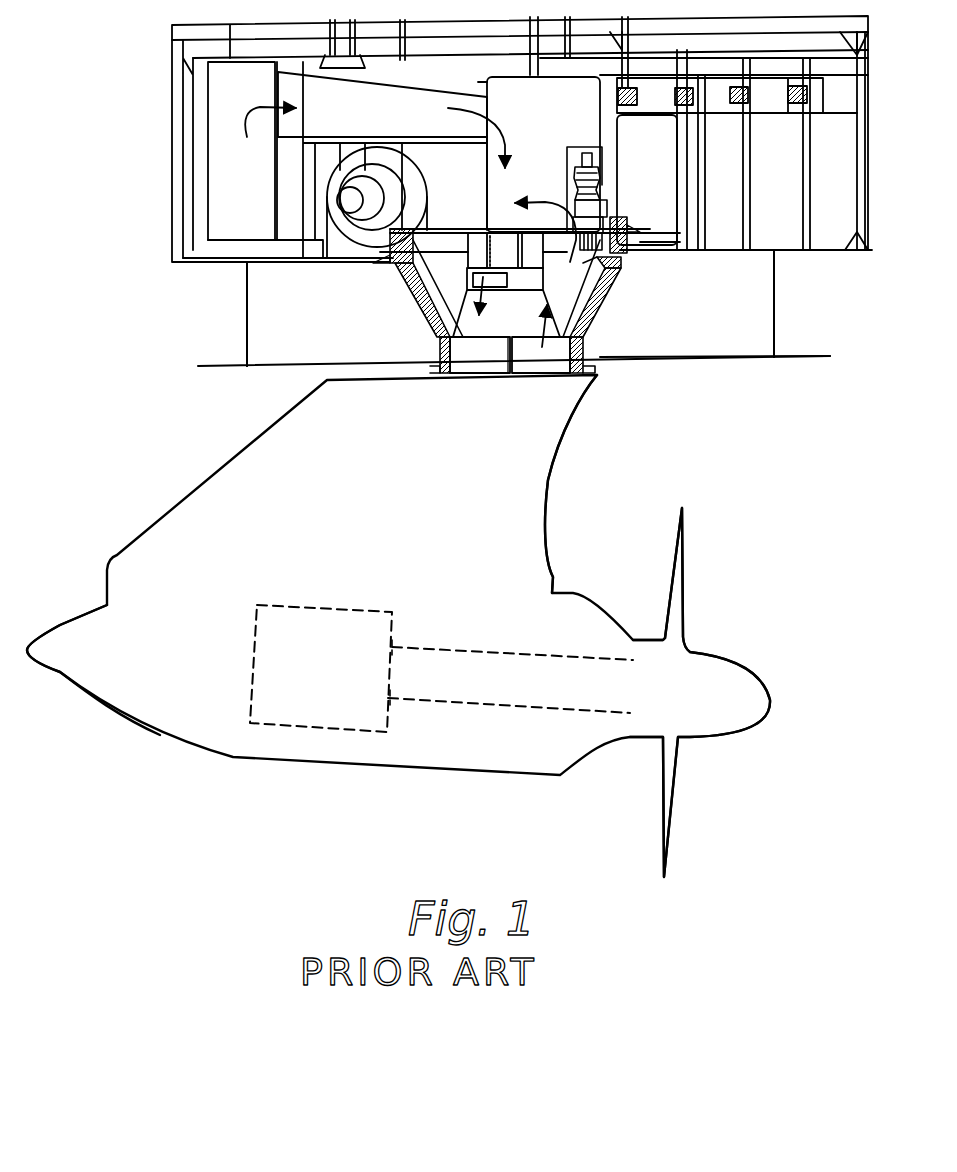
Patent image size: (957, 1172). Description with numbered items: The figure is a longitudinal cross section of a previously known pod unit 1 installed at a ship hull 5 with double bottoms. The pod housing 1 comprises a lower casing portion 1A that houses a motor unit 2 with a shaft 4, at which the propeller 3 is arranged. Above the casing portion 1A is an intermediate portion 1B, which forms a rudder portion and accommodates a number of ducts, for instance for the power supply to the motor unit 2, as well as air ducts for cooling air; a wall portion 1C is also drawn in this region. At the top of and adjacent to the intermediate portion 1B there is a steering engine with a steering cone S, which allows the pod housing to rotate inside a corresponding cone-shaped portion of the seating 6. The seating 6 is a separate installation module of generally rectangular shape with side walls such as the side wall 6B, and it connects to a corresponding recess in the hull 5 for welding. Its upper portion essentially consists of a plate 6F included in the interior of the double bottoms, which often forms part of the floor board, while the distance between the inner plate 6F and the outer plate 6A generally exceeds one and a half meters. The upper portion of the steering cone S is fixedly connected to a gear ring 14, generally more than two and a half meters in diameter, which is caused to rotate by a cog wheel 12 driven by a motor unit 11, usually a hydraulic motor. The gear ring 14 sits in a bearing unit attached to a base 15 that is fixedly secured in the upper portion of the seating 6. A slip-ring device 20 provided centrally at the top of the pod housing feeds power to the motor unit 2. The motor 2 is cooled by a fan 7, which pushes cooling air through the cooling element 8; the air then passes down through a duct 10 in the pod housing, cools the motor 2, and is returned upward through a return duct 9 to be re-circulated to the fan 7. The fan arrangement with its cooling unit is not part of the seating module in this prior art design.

The pod unit 1 is at (148, 481).
The lower casing portion 1A is at (122, 717).
The intermediate portion 1B is at (552, 478).
The stern tube wall of the hull 1C is at (592, 306).
The motor unit 2 is at (267, 637).
The propeller 3 is at (677, 627).
The shaft 4 is at (488, 667).
The ship hull 5 is at (802, 358).
The seating 6 is at (652, 366).
The outer plate 6A is at (727, 358).
The side wall 6B is at (777, 292).
The plate 6F is at (265, 267).
The fan 7 is at (337, 200).
The cooling element 8 is at (290, 213).
The return duct 9 is at (540, 365).
The duct 10 is at (473, 367).
The motor unit 11 is at (603, 187).
The cog wheel 12 is at (613, 232).
The gear ring 14 is at (625, 260).
The base 15 is at (397, 277).
The slip-ring device 20 is at (502, 243).
The steering cone S is at (410, 307).